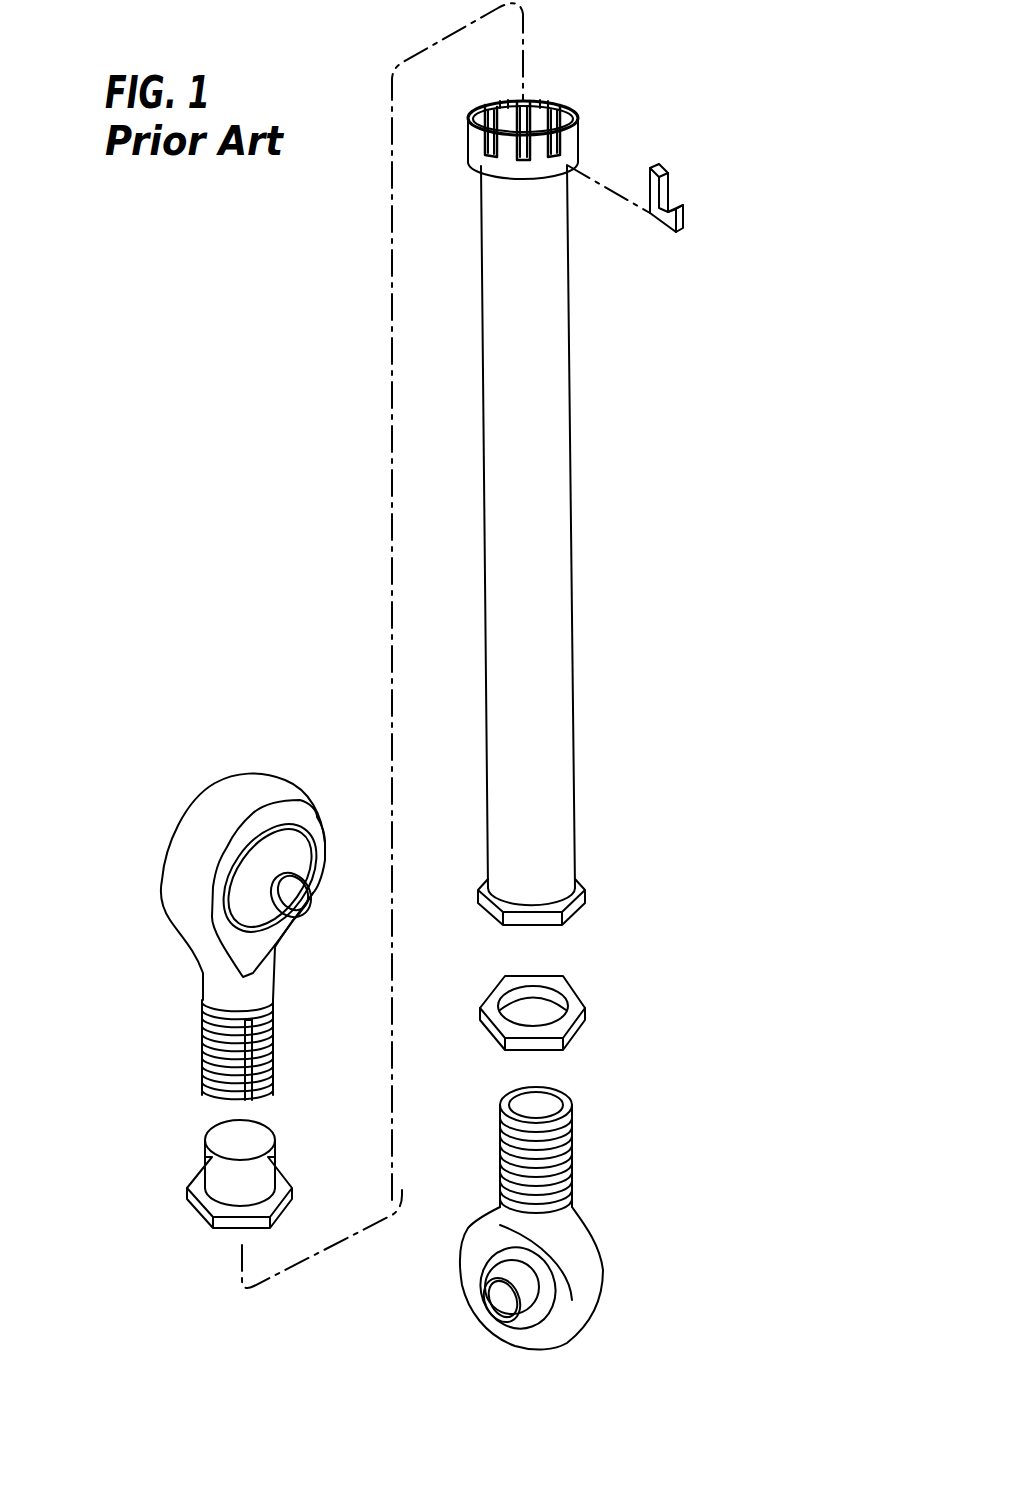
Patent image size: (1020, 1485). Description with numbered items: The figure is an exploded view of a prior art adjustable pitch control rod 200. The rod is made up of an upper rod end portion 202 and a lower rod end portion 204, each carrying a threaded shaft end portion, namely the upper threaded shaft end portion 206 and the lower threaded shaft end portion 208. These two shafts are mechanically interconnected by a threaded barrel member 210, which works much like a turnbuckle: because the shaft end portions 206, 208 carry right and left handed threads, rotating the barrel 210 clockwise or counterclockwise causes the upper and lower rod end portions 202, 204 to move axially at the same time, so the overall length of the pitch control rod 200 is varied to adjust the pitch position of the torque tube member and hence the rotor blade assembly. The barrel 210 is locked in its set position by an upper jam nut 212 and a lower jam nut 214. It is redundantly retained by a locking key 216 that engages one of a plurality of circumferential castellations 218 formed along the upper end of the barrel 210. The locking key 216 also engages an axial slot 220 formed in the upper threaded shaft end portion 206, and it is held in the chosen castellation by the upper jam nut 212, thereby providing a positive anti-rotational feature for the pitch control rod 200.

The pitch control rod 200 is at (662, 430).
The upper rod end portion 202 is at (208, 940).
The lower rod end portion 204 is at (563, 1232).
The upper threaded shaft end portion 206 is at (207, 1057).
The lower threaded shaft end portion 208 is at (550, 1157).
The threaded barrel member 210 is at (553, 582).
The upper jam nut 212 is at (218, 1177).
The lower jam nut 214 is at (575, 1007).
The locking key 216 is at (668, 187).
The circumferential castellations 218 is at (570, 140).
The axial slot 220 is at (250, 1055).